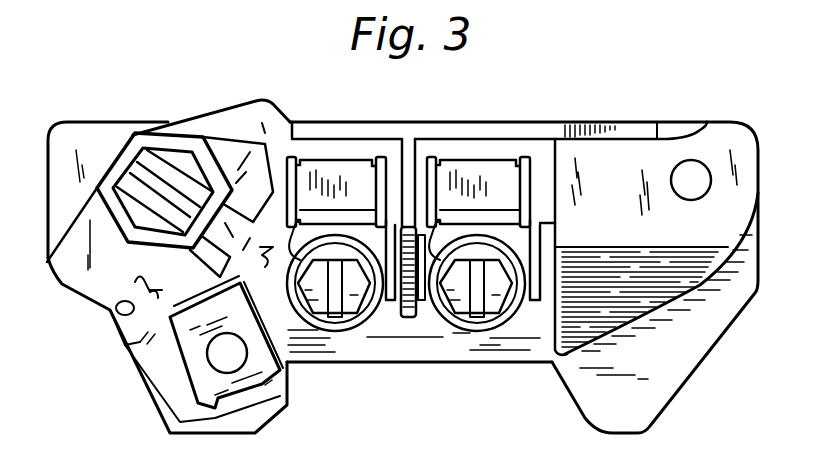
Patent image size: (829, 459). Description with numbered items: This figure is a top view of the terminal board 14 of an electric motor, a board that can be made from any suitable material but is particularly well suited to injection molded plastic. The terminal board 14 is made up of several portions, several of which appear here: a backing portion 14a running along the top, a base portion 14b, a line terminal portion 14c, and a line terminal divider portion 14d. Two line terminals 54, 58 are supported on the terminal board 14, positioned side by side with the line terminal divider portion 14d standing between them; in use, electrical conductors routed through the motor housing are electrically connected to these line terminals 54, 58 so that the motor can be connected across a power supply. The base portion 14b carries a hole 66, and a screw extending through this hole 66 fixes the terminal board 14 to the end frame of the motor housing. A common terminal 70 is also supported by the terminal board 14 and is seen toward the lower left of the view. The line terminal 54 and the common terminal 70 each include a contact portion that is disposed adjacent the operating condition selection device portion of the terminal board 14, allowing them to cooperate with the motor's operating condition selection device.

The terminal board 14 is at (145, 421).
The backing portion 14a is at (528, 123).
The base portion 14b is at (638, 178).
The line terminal portion 14c is at (523, 337).
The line terminal divider portion 14d is at (408, 316).
The line terminal 54 is at (353, 167).
The line terminal 58 is at (477, 167).
The hole 66 is at (690, 170).
The common terminal 70 is at (257, 381).